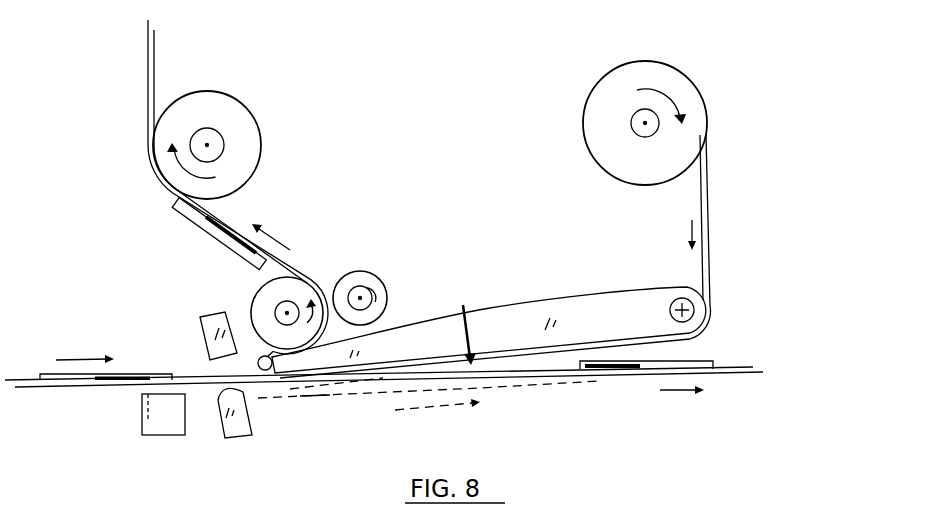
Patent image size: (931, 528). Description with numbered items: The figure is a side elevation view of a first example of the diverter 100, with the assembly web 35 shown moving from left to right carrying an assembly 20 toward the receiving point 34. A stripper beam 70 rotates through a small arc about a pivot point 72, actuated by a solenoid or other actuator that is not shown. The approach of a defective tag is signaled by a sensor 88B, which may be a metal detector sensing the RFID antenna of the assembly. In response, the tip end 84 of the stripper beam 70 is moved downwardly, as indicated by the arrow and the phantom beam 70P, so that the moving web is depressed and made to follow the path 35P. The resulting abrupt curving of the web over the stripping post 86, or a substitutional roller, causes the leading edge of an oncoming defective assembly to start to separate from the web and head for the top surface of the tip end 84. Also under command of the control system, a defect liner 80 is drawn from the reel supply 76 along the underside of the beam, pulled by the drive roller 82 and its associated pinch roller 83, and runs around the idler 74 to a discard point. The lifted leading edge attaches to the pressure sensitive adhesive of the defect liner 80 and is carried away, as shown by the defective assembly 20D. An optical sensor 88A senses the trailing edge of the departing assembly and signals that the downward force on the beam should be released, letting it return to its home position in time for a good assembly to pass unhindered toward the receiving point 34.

The diverter 100 is at (446, 78).
The idler 74 is at (252, 148).
The reel supply 76 is at (697, 88).
The defect liner 80 is at (706, 187).
The drive roller 82 is at (258, 294).
The pinch roller 83 is at (373, 277).
The tip end 84 is at (263, 356).
The stripper beam 70 is at (583, 300).
The pivot point 72 is at (697, 302).
The assembly web 35 is at (50, 390).
The assembly 20 is at (150, 372).
The defective assembly 20D is at (196, 222).
The receiving point 34 is at (830, 365).
The web path 35P is at (513, 390).
The phantom beam 70P is at (317, 392).
The stripping post 86 is at (233, 392).
The optical sensor 88A is at (210, 325).
The sensor 88B is at (142, 426).